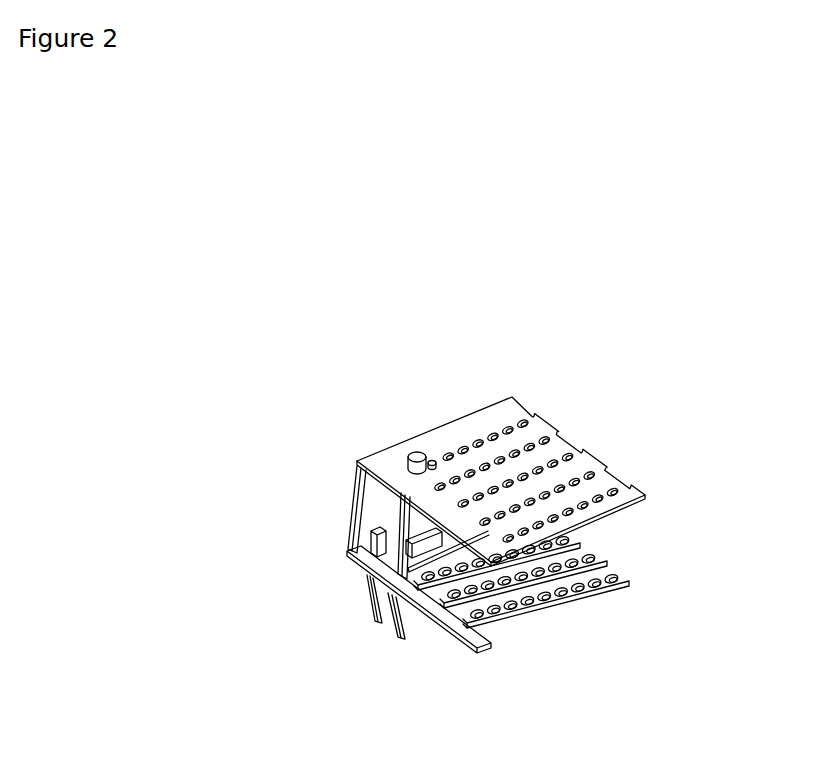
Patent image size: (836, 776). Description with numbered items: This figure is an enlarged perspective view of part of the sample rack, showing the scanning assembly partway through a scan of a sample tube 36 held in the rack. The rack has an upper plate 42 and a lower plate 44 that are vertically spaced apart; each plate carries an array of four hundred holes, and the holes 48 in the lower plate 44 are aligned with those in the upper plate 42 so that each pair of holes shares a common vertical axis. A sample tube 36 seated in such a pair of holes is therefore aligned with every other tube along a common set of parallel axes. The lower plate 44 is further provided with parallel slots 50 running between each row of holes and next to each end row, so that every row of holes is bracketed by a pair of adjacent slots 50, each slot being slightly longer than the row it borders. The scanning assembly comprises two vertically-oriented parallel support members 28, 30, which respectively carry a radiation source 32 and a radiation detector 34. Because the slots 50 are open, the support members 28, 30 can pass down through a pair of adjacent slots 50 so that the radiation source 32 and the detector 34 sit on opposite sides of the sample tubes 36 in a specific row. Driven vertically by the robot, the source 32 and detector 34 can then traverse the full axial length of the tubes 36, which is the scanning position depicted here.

The support member 28 is at (366, 612).
The support member 30 is at (395, 637).
The radiation source 32 is at (503, 650).
The radiation detector 34 is at (366, 524).
The sample tube 36 is at (500, 652).
The upper plate 42 is at (598, 467).
The lower plate 44 is at (607, 567).
The holes 48 is at (562, 630).
The slots 50 is at (500, 652).